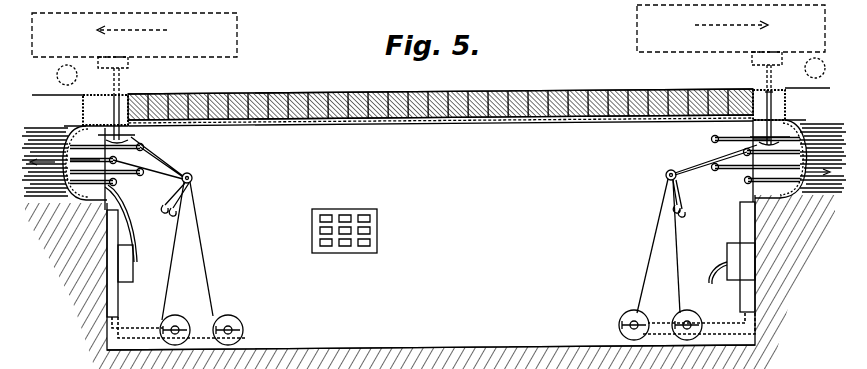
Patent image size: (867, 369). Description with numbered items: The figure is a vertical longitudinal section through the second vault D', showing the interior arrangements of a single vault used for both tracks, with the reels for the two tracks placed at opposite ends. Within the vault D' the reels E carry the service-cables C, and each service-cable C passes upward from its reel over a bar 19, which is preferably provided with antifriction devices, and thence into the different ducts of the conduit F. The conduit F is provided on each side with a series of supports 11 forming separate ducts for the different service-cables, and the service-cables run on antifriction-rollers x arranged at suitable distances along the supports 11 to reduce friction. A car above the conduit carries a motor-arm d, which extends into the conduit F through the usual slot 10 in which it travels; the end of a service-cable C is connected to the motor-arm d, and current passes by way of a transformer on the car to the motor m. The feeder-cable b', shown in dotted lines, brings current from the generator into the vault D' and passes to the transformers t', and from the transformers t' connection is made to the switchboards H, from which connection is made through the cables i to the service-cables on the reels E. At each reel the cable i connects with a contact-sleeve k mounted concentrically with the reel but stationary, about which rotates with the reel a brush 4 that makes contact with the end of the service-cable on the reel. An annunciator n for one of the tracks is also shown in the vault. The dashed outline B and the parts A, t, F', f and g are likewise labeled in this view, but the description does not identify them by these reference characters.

The belt conveyor A is at (506, 91).
The driving mechanism (dashed) B is at (428, 31).
The motor m is at (441, 71).
The shaft / rod t is at (440, 98).
The slot 10 is at (764, 92).
The motor-arm d is at (112, 110).
The conduit F is at (75, 168).
The right fluid chamber F' is at (799, 161).
The valve bar f is at (96, 135).
The antifriction-roller x is at (728, 179).
The support 11 is at (420, 153).
The bar 19 is at (192, 177).
The cords g is at (435, 184).
The service-cable C is at (200, 254).
The reel E is at (186, 320).
The contact-sleeve k is at (234, 330).
The brush 4 is at (176, 321).
The cable i is at (433, 324).
The transformer t' is at (431, 259).
The feeder-cable b' is at (416, 234).
The switchboard H is at (107, 273).
The second vault D' is at (431, 276).
The annunciator n is at (344, 210).